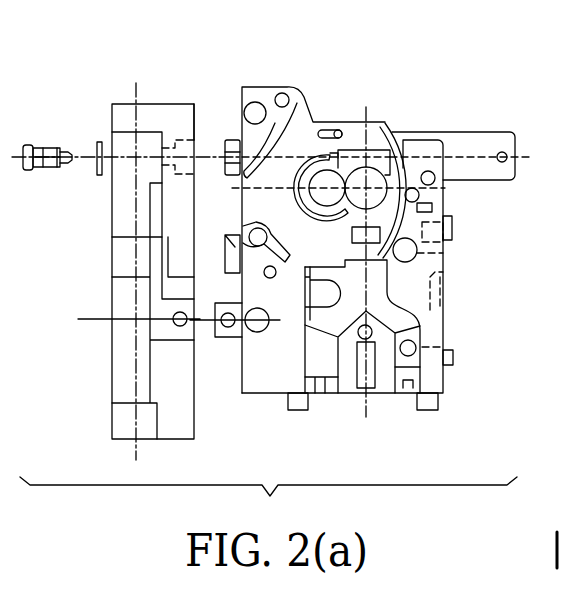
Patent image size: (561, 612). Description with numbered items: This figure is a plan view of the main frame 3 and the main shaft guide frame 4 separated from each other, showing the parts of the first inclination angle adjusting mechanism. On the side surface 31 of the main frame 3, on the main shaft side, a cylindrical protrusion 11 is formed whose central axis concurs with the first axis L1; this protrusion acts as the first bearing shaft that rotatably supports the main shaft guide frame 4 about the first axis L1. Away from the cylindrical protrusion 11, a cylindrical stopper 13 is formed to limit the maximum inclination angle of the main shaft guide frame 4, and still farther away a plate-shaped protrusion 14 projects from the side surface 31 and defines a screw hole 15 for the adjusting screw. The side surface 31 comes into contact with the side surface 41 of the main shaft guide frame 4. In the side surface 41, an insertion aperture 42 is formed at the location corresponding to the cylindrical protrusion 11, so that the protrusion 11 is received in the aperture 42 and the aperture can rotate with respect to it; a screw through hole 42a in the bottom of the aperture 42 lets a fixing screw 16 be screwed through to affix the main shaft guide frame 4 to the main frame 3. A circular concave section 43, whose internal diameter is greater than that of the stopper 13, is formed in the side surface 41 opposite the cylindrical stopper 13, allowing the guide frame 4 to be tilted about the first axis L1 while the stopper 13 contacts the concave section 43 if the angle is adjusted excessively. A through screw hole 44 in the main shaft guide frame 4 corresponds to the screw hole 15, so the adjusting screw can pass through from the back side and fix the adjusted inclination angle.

The main frame 3 is at (475, 123).
The main shaft guide frame 4 is at (112, 104).
The cylindrical protrusion 11 is at (230, 138).
The cylindrical stopper 13 is at (225, 235).
The plate-shaped protrusion 14 is at (220, 340).
The screw hole 15 is at (232, 323).
The fixing screw 16 is at (53, 148).
The side surface 31 is at (238, 392).
The side surface 41 is at (198, 107).
The insertion aperture 42 is at (183, 140).
The screw through hole 42a is at (162, 177).
The circular concave section 43 is at (168, 257).
The through screw hole 44 is at (173, 323).
The first axis L1 is at (460, 160).